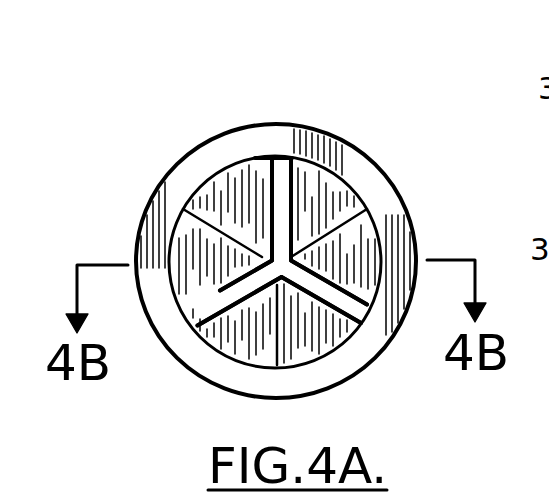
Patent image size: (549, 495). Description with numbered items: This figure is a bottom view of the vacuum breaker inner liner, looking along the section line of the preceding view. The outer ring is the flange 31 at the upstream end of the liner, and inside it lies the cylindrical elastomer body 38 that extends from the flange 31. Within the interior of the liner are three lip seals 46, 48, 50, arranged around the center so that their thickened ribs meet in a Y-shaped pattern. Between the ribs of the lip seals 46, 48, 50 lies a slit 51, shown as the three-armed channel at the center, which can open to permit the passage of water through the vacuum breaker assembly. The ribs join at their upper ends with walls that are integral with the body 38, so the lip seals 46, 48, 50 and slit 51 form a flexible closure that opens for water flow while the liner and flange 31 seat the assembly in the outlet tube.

The flange 31 is at (197, 147).
The body 38 is at (355, 190).
The lip seal 46 is at (313, 138).
The lip seal 48 is at (333, 331).
The lip seal 50 is at (218, 334).
The slit 51 is at (301, 184).